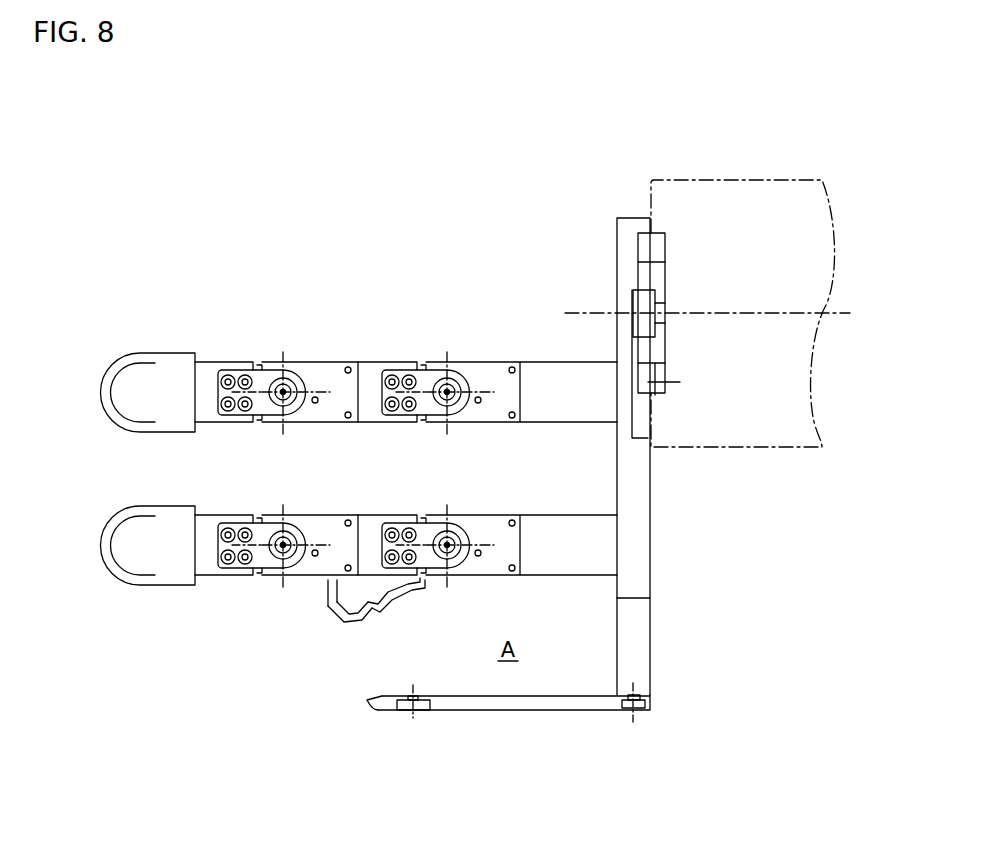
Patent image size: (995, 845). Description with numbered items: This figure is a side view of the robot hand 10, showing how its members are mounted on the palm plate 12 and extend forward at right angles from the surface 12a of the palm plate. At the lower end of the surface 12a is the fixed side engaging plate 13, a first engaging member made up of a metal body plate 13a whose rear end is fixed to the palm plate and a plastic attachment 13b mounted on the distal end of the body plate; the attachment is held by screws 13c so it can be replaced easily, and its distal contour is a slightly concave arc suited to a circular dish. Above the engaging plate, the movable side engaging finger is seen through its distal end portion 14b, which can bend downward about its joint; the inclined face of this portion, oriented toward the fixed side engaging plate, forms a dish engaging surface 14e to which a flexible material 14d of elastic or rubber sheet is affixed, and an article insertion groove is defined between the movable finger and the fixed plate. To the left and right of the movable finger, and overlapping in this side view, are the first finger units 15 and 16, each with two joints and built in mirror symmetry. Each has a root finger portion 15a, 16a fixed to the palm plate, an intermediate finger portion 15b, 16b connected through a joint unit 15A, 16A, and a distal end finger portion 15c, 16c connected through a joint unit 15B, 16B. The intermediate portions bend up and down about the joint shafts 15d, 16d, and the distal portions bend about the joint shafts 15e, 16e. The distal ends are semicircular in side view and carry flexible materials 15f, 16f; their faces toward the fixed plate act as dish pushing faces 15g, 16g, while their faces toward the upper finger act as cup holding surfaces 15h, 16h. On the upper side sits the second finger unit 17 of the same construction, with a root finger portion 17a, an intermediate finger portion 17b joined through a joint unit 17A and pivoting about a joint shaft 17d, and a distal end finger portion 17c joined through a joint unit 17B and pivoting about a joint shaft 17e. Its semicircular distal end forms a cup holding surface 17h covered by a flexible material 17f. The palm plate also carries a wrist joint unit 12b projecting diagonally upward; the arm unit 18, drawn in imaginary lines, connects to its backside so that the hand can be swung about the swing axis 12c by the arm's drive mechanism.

The robot hand 10 is at (432, 172).
The palm plate 12 is at (631, 427).
The surface of the palm plate 12a is at (617, 620).
The wrist joint unit 12b is at (628, 250).
The swing axis 12c is at (606, 302).
The fixed side engaging plate 13 is at (497, 723).
The body plate 13a is at (548, 700).
The attachment 13b is at (367, 702).
The screws 13c is at (415, 695).
The distal end portion 14b is at (330, 598).
The flexible material 14d is at (345, 622).
The dish engaging surface 14e is at (398, 612).
The first finger unit 15 is at (344, 596).
The joint unit 15A is at (432, 586).
The joint unit 15B is at (262, 590).
The root finger portion 15a is at (521, 505).
The intermediate finger portion 15b is at (345, 522).
The distal end finger portion 15c is at (236, 522).
The joint shaft 15d is at (450, 542).
The joint shaft 15e is at (287, 542).
The flexible material 15f is at (160, 585).
The dish pushing face 15g is at (103, 590).
The cup holding surface 15h is at (158, 512).
The first finger unit 16 is at (344, 596).
The joint unit 16A is at (479, 568).
The joint unit 16B is at (270, 620).
The root finger portion 16a is at (521, 505).
The intermediate finger portion 16b is at (413, 505).
The distal end finger portion 16c is at (290, 505).
The joint shaft 16d is at (481, 511).
The joint shaft 16e is at (308, 511).
The flexible material 16f is at (148, 585).
The dish pushing face 16g is at (113, 588).
The cup holding surface 16h is at (204, 505).
The second finger unit 17 is at (331, 333).
The joint unit 17A is at (420, 350).
The joint unit 17B is at (260, 350).
The root finger portion 17a is at (555, 362).
The intermediate finger portion 17b is at (345, 362).
The distal end finger portion 17c is at (203, 360).
The joint shaft 17d is at (447, 390).
The joint shaft 17e is at (286, 390).
The flexible material 17f is at (150, 354).
The cup holding surface 17h is at (118, 422).
The arm unit 18 is at (731, 170).